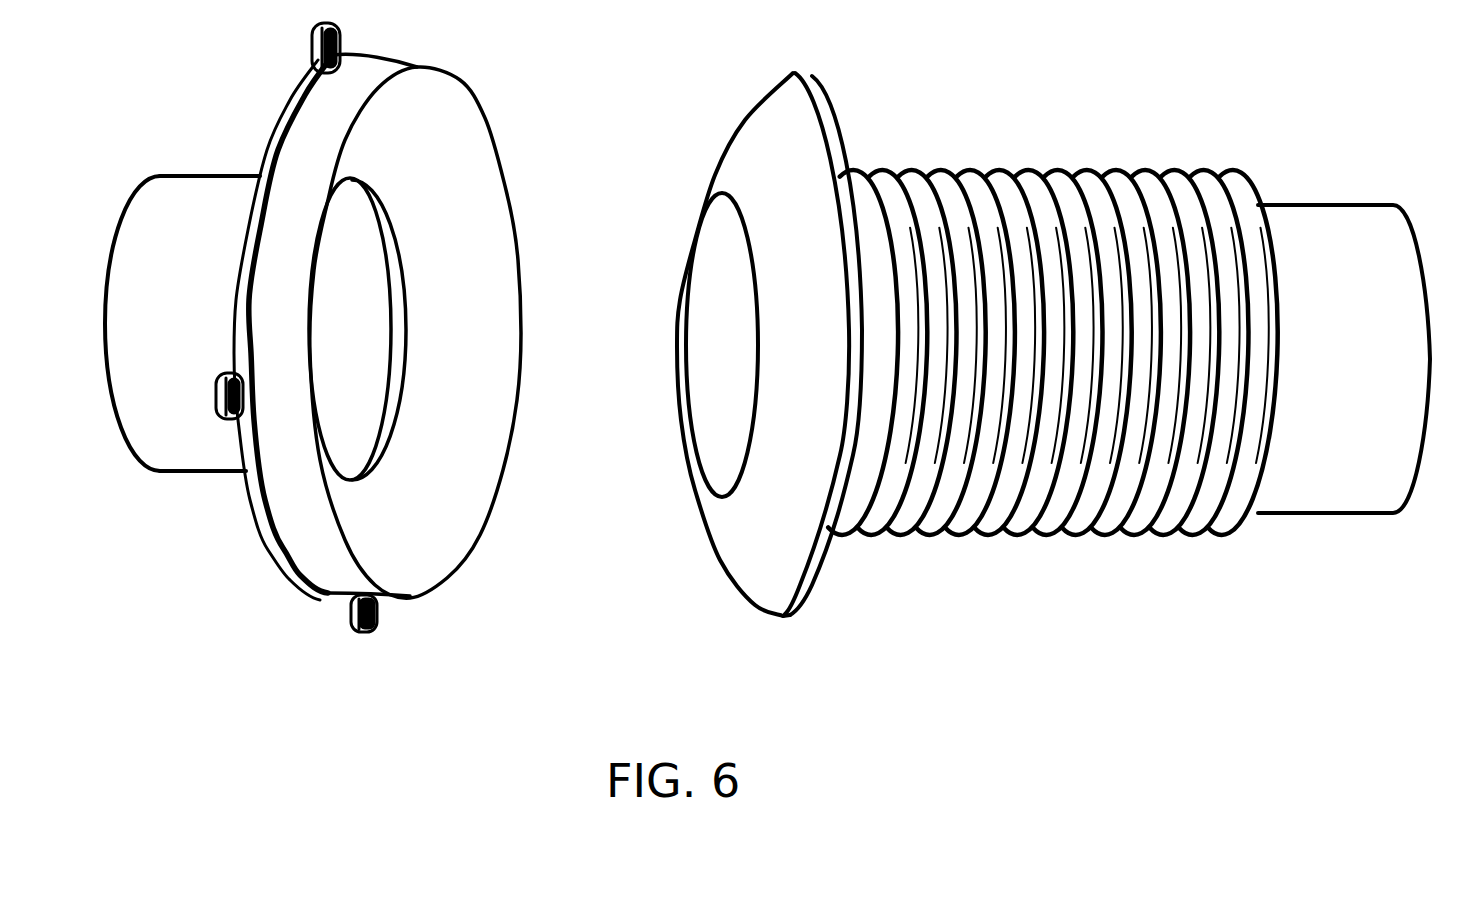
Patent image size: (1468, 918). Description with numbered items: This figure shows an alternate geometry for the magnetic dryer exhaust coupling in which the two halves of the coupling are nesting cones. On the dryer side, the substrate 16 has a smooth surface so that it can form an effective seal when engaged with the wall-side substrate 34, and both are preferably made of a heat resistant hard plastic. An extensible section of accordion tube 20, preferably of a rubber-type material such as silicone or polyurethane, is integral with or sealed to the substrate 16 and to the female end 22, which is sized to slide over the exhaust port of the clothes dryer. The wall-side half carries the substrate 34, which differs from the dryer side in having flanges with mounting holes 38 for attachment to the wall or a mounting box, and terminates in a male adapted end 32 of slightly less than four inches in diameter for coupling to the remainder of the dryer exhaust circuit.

The substrate of the dryer half of the coupling 16 is at (830, 558).
The accordion tube 20 is at (1065, 188).
The female end 22 is at (1318, 240).
The male adapted end 32 is at (172, 434).
The substrate 34 is at (262, 149).
The mounting holes 38 is at (352, 607).